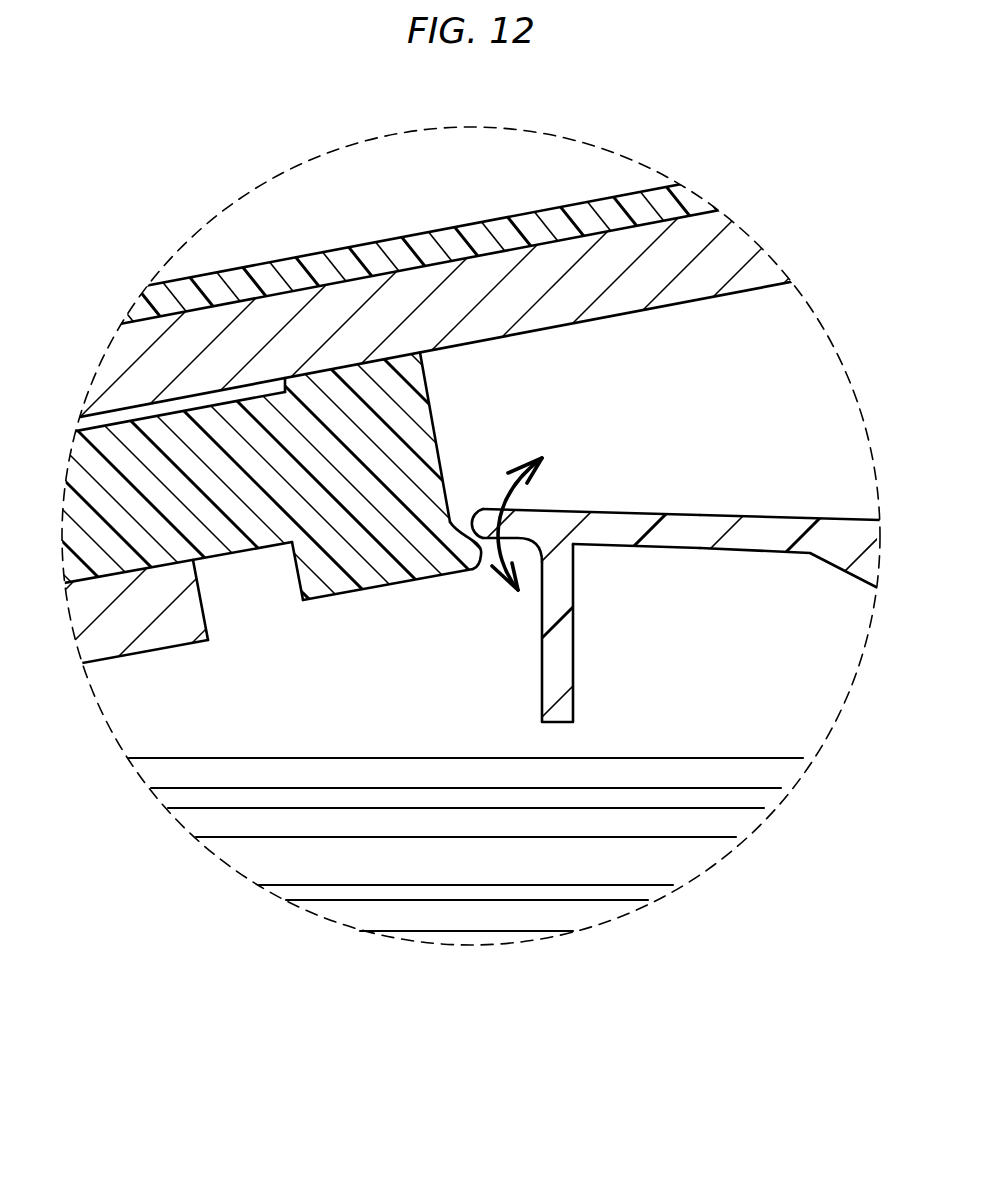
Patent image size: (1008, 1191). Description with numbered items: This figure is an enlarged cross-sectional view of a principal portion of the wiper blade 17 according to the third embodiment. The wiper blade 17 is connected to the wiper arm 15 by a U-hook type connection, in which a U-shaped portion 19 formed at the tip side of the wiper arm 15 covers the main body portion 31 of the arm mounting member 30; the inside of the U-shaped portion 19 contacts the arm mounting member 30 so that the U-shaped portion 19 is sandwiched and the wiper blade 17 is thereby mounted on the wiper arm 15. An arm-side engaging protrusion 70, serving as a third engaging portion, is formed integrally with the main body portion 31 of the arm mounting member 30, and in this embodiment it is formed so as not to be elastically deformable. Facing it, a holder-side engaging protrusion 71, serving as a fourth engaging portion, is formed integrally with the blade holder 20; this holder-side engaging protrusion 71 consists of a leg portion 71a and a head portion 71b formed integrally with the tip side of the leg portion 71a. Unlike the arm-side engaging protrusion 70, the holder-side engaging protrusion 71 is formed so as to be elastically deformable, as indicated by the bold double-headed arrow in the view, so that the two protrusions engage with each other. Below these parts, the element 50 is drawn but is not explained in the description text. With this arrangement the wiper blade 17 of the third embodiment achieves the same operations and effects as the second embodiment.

The wiper blade 17 is at (238, 175).
The wiper arm 15 is at (718, 248).
The main body portion 31 is at (110, 452).
The arm mounting member 30 is at (362, 368).
The U-shaped portion 19 is at (93, 627).
The arm-side engaging protrusion 70 is at (470, 556).
The holder-side engaging protrusion 71 is at (527, 576).
The leg portion 71a is at (533, 528).
The head portion 71b is at (480, 520).
The blade holder 20 is at (850, 527).
The stacked sheets 50 is at (361, 876).